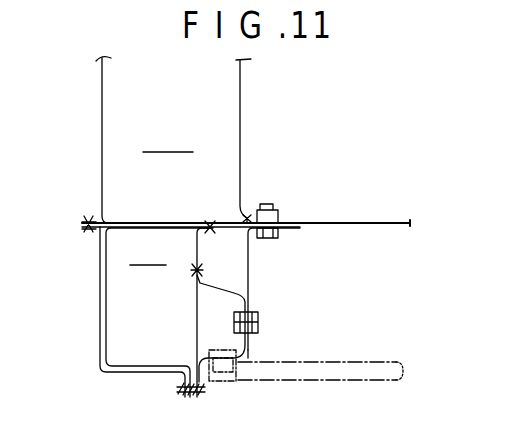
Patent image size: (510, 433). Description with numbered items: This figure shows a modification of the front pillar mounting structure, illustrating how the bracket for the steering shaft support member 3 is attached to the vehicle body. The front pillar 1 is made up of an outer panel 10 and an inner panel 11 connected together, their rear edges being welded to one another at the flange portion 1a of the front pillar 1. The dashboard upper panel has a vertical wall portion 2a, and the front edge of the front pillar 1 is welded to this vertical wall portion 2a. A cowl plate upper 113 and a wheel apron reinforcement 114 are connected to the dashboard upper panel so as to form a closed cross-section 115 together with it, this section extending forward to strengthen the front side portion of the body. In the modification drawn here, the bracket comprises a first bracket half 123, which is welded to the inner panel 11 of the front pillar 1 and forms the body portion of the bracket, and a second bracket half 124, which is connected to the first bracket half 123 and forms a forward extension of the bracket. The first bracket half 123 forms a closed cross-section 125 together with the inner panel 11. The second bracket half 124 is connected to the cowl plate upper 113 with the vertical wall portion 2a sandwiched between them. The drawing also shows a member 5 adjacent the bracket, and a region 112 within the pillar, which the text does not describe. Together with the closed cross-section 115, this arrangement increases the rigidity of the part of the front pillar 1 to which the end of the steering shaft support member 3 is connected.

The front pillar 1 is at (179, 308).
The flange portion 1a is at (188, 396).
The vertical wall portion 2a is at (352, 221).
The steering shaft support member 3 is at (373, 361).
The clip 5 is at (227, 382).
The outer panel 10 is at (108, 274).
The inner panel 11 is at (197, 286).
The horizontal wall 112 is at (159, 312).
The cowl plate upper 113 is at (242, 132).
The wheel apron reinforcement 114 is at (102, 122).
The closed cross-section 115 is at (168, 140).
The first bracket half 123 is at (252, 358).
The second bracket half 124 is at (253, 273).
The closed cross-section 125 is at (213, 309).